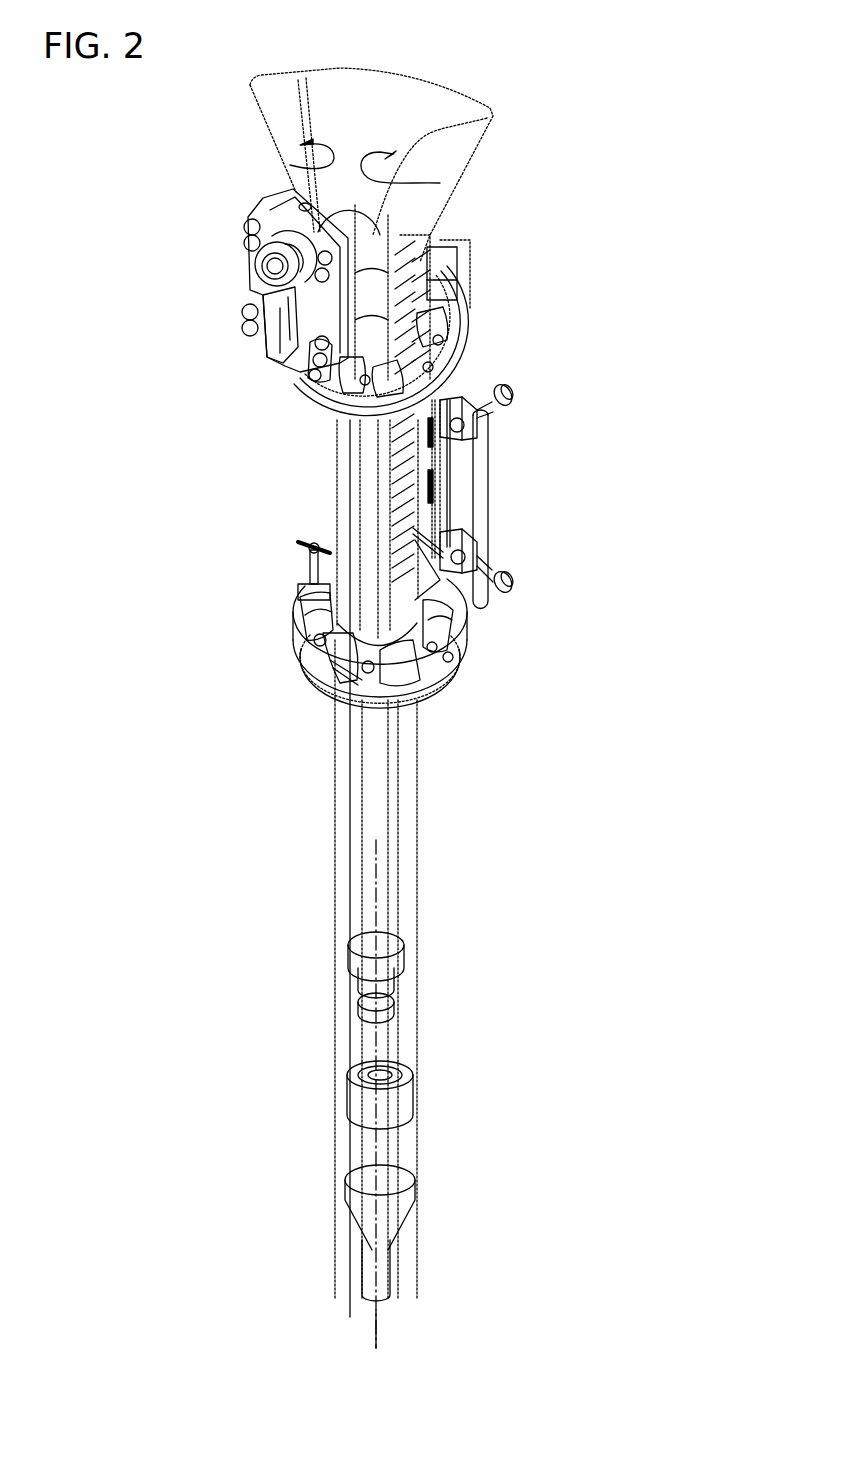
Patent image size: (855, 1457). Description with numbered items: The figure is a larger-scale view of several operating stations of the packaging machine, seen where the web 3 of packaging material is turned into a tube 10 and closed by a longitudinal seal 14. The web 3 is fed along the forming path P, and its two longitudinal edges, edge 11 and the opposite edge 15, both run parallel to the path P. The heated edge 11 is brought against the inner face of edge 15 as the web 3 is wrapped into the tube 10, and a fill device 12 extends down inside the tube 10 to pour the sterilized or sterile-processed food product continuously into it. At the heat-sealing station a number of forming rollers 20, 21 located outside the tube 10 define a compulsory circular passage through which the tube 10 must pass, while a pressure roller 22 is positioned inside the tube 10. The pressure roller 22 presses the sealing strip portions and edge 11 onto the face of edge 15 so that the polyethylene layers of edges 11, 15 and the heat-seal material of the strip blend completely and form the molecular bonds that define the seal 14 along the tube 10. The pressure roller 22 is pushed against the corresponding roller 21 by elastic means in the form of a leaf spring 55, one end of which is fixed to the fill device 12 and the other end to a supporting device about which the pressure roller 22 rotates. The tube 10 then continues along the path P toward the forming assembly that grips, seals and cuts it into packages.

The web 3 is at (331, 88).
The fill device 12 is at (352, 203).
The longitudinal edge 15 is at (290, 165).
The longitudinal edge 11 is at (440, 183).
The leaf spring 55 is at (300, 563).
The pressure roller 22 is at (298, 665).
The forming rollers 20 is at (320, 612).
The forming roller 21 is at (323, 663).
The tube 10 is at (405, 1013).
The longitudinal seal 14 is at (355, 1044).
The forming path P is at (377, 1318).